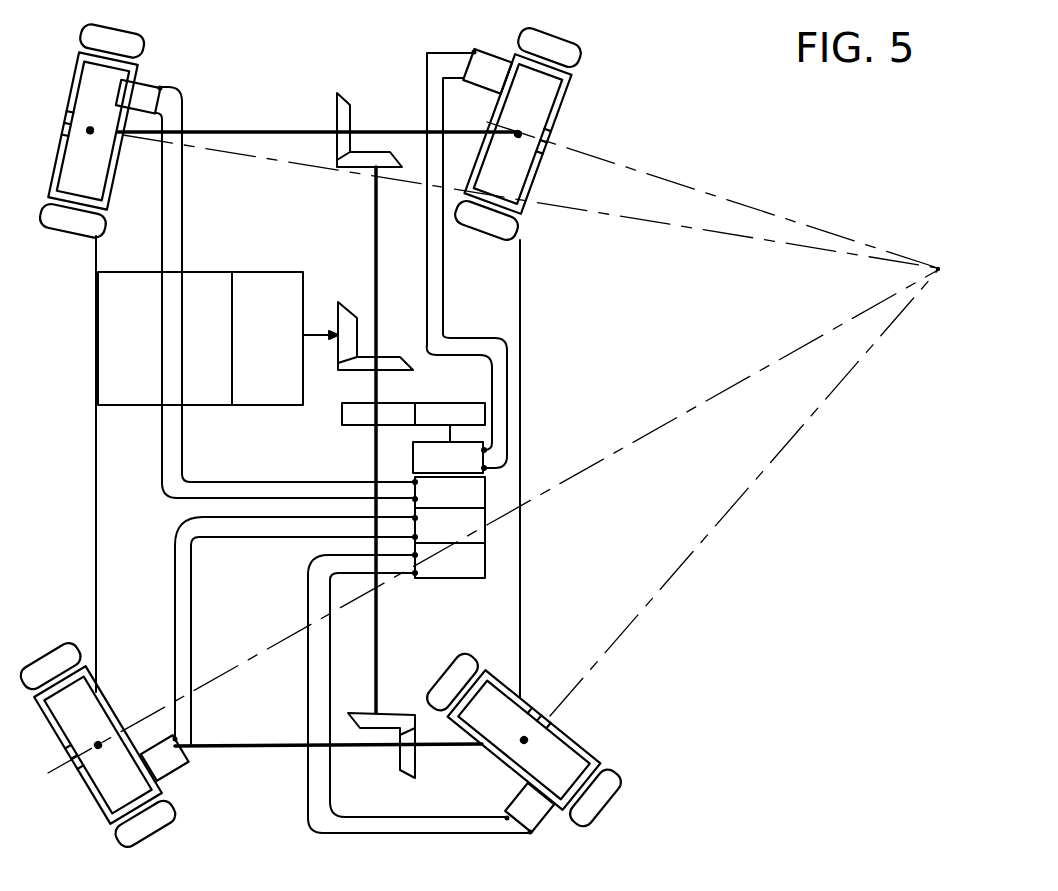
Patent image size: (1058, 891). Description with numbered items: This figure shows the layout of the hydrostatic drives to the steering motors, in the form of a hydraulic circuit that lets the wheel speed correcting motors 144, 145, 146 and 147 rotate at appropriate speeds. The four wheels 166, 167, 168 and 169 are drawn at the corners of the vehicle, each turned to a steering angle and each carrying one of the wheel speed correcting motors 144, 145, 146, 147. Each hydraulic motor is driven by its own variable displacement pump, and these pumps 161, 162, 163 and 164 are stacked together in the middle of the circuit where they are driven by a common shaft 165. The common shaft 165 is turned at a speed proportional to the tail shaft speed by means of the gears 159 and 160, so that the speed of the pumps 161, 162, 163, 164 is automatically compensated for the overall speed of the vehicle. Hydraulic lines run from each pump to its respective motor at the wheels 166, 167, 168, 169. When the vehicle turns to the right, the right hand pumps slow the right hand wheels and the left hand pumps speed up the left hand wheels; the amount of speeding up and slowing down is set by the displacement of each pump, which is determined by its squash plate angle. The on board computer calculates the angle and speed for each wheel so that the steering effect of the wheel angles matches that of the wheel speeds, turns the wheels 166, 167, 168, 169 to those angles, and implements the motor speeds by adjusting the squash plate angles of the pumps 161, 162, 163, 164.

The wheel speed correcting motor 144 is at (487, 71).
The wheel speed correcting motor 145 is at (138, 97).
The wheel speed correcting motor 146 is at (183, 770).
The wheel speed correcting motor 147 is at (541, 828).
The gear 159 is at (362, 387).
The gear 160 is at (424, 388).
The variable displacement pump 161 is at (458, 470).
The variable displacement pump 162 is at (465, 505).
The variable displacement pump 163 is at (470, 539).
The variable displacement pump 164 is at (468, 575).
The common shaft 165 is at (452, 428).
The wheel 166 is at (517, 133).
The wheel 167 is at (610, 777).
The wheel 168 is at (162, 830).
The wheel 169 is at (146, 40).